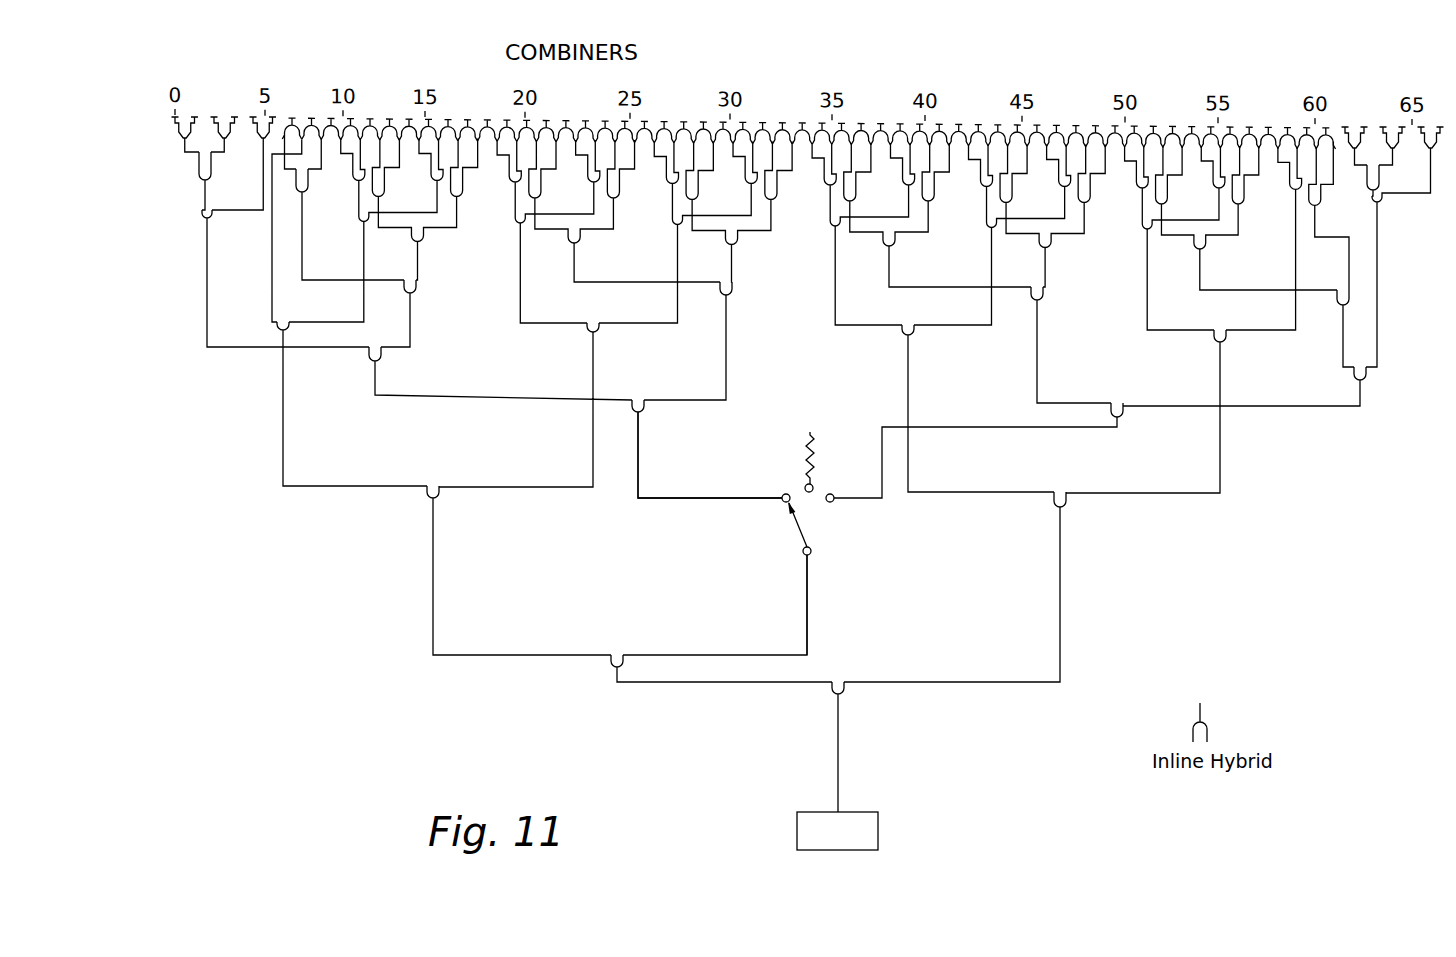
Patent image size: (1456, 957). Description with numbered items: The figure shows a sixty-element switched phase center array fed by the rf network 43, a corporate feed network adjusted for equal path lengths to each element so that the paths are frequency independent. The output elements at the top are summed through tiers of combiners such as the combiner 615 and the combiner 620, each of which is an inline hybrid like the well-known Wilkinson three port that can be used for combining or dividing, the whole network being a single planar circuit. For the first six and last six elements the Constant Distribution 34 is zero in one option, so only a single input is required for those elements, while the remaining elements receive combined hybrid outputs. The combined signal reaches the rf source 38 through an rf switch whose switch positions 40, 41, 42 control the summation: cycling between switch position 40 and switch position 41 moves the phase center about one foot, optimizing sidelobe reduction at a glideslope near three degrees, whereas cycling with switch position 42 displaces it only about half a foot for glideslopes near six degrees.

The combiner 615 is at (452, 114).
The combiner 620 is at (555, 113).
The rf network 43 is at (196, 267).
The switch position 40 is at (787, 493).
The switch position 41 is at (834, 500).
The switch position 42 is at (813, 483).
The Constant Distribution 34 is at (820, 524).
The rf source 38 is at (878, 822).